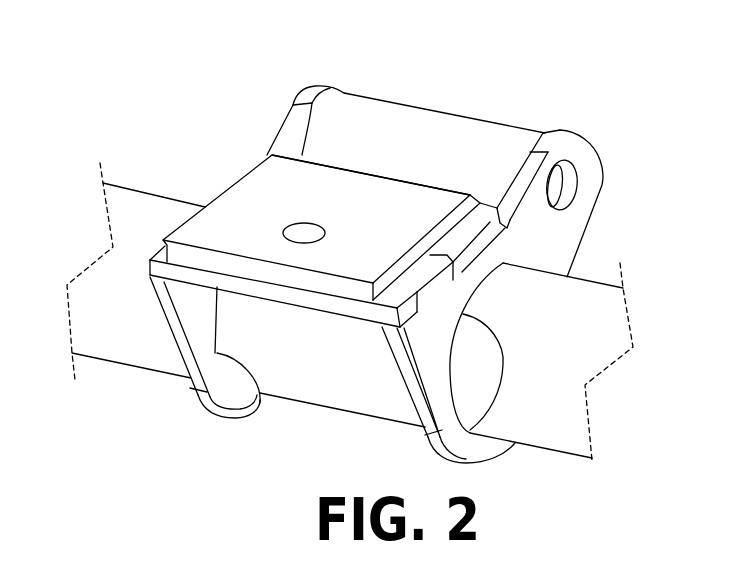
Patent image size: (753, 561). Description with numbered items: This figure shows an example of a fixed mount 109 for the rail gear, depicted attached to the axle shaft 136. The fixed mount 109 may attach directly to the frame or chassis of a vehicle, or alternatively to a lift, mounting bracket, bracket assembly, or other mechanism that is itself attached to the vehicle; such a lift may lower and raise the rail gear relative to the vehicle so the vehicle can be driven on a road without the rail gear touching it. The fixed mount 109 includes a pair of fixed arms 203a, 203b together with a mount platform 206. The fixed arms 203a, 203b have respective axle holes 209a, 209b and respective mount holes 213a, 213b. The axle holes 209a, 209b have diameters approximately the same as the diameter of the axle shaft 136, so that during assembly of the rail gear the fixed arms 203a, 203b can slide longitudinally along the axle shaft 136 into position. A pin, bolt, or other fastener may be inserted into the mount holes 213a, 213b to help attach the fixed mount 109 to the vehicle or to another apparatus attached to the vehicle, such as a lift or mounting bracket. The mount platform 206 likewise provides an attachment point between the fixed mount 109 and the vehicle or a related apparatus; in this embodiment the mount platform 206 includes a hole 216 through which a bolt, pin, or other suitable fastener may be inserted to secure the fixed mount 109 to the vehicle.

The fixed mount 109 is at (487, 79).
The axle shaft 136 is at (128, 343).
The fixed arm 203a is at (188, 362).
The fixed arm 203b is at (408, 375).
The mount platform 206 is at (265, 193).
The axle hole 209a is at (261, 406).
The axle hole 209b is at (475, 363).
The mount hole 213a is at (288, 113).
The mount hole 213b is at (565, 192).
The hole 216 is at (303, 233).